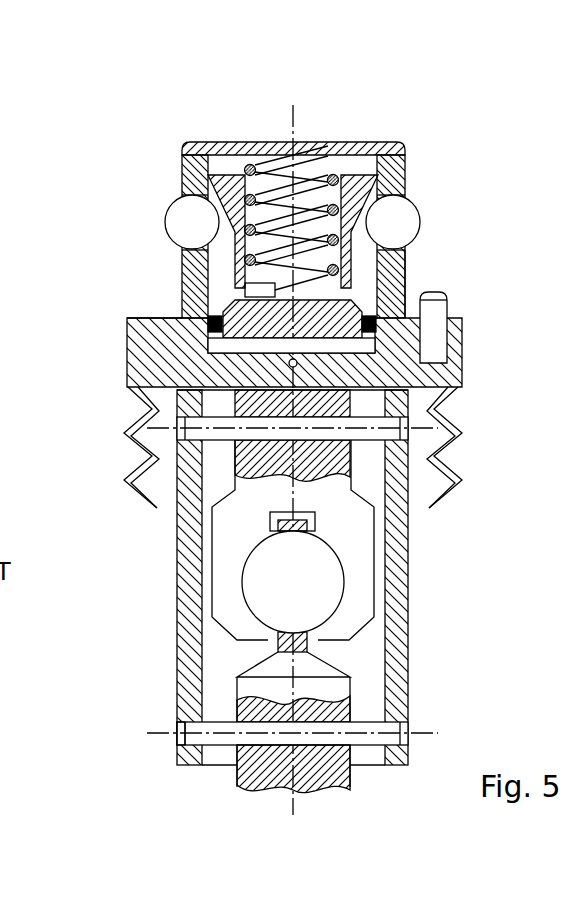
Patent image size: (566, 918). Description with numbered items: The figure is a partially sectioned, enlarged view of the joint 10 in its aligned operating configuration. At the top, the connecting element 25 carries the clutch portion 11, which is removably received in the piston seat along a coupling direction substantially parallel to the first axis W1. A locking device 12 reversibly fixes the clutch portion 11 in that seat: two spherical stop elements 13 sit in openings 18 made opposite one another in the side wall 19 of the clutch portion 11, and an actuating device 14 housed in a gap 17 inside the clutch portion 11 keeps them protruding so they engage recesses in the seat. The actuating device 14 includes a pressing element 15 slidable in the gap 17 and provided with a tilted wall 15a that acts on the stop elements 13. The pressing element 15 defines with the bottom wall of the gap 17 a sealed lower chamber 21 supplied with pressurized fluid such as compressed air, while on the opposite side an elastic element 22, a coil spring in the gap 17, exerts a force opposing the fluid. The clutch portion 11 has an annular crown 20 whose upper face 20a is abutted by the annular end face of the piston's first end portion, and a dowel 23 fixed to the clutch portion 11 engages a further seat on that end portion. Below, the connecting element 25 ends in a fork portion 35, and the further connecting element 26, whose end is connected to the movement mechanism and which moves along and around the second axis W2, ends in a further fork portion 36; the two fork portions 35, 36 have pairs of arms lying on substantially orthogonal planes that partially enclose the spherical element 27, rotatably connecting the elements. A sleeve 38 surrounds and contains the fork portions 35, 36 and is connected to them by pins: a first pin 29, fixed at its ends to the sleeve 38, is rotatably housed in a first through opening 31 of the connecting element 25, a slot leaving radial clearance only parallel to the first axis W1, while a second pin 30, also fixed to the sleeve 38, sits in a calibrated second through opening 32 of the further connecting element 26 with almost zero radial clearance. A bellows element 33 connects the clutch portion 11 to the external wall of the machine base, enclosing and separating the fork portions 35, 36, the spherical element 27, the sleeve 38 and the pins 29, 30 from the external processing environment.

The joint 10 is at (127, 172).
The clutch portion 11 is at (182, 158).
The locking device 12 is at (417, 150).
The stop element 13 is at (418, 225).
The actuating device 14 is at (230, 165).
The pressing element 15 is at (356, 180).
The tilted wall 15a is at (405, 265).
The gap 17 is at (215, 297).
The opening 18 is at (400, 232).
The side wall 19 is at (190, 190).
The annular crown 20 is at (153, 348).
The upper face 20a is at (163, 318).
The lower chamber 21 is at (360, 347).
The elastic element 22 is at (263, 170).
The dowel 23 is at (433, 293).
The connecting element 25 is at (320, 455).
The further connecting element 26 is at (237, 771).
The spherical element 27 is at (327, 580).
The first pin 29 is at (198, 440).
The second pin 30 is at (220, 722).
The first through opening 31 is at (222, 558).
The second through opening 32 is at (345, 730).
The bellows element 33 is at (133, 480).
The fork portion 35 is at (350, 526).
The further fork portion 36 is at (318, 670).
The sleeve 38 is at (403, 757).
The first axis W1 is at (295, 122).
The second axis W2 is at (293, 815).